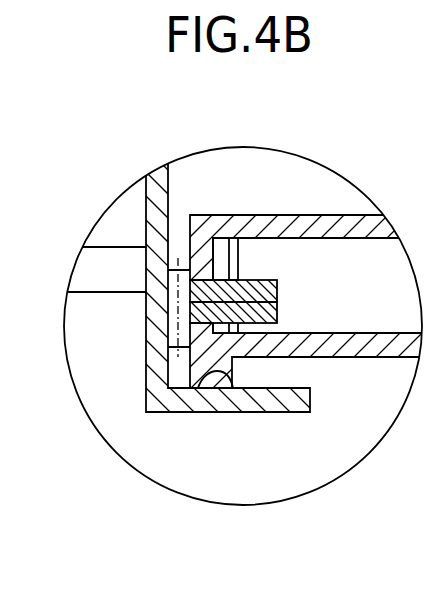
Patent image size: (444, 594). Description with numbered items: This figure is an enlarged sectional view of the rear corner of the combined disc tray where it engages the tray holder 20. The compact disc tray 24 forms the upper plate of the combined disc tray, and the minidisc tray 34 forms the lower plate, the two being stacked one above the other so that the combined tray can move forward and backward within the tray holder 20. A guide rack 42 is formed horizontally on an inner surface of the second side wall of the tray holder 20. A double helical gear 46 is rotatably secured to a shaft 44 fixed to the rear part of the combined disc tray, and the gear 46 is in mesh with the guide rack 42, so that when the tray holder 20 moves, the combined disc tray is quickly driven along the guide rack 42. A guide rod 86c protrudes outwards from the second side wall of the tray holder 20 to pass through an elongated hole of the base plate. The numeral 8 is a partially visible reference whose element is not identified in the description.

The tray holder 20 is at (222, 381).
The compact disc tray 24 is at (337, 222).
The minidisc tray 34 is at (345, 355).
The guide rack 42 is at (163, 338).
The shaft 44 is at (238, 256).
The double helical gear 46 is at (277, 298).
The guide rod 86c is at (115, 281).
The frame 8 is at (438, 359).